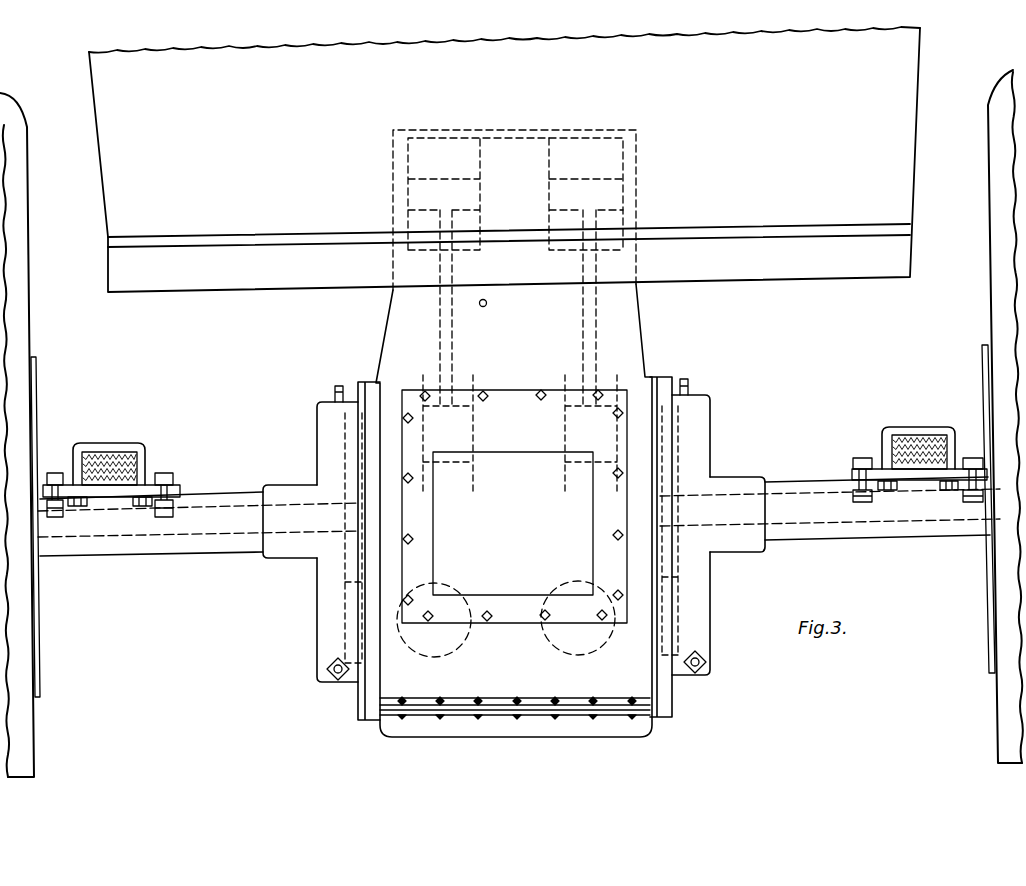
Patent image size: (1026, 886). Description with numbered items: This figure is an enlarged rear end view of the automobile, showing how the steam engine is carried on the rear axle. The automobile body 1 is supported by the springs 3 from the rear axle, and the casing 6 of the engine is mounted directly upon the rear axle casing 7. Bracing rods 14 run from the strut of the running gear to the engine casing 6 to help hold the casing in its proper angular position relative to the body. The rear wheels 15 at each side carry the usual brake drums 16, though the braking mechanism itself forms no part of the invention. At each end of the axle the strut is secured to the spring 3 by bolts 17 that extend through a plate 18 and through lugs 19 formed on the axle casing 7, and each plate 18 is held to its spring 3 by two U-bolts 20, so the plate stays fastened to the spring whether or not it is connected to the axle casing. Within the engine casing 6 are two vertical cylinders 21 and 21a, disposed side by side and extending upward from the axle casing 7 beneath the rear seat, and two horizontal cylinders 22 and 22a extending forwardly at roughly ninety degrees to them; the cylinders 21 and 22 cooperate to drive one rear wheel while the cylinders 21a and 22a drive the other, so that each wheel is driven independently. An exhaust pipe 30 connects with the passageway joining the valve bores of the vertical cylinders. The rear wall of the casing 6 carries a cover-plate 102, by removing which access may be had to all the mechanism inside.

The automobile body 1 is at (908, 133).
The rear spring 3 is at (900, 438).
The engine casing 6 is at (531, 690).
The rear axle casing 7 is at (787, 485).
The bracing rods 14 is at (728, 662).
The rear wheels 15 is at (979, 276).
The brake drums 16 is at (980, 603).
The bolts 17 is at (514, 474).
The plate 18 is at (853, 472).
The lugs 19 is at (968, 488).
The U-bolts 20 is at (913, 430).
The vertical cylinder 21 is at (393, 172).
The vertical cylinder 21a is at (636, 178).
The horizontal cylinder 22 is at (421, 652).
The horizontal cylinder 22a is at (602, 647).
The exhaust pipe 30 is at (496, 314).
The cover-plate 102 is at (513, 585).